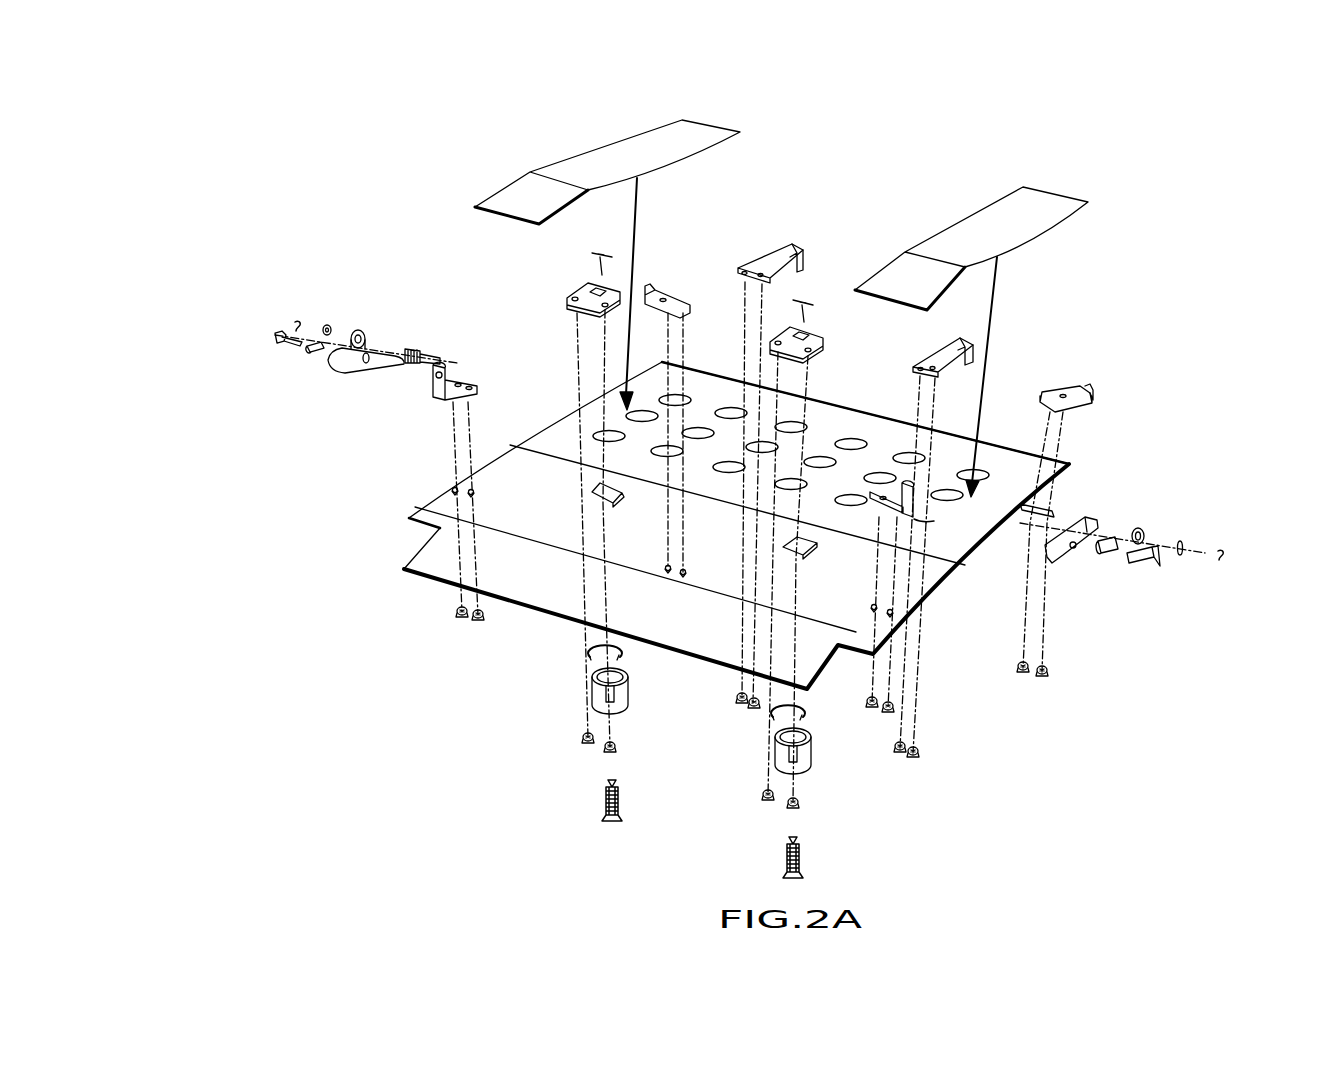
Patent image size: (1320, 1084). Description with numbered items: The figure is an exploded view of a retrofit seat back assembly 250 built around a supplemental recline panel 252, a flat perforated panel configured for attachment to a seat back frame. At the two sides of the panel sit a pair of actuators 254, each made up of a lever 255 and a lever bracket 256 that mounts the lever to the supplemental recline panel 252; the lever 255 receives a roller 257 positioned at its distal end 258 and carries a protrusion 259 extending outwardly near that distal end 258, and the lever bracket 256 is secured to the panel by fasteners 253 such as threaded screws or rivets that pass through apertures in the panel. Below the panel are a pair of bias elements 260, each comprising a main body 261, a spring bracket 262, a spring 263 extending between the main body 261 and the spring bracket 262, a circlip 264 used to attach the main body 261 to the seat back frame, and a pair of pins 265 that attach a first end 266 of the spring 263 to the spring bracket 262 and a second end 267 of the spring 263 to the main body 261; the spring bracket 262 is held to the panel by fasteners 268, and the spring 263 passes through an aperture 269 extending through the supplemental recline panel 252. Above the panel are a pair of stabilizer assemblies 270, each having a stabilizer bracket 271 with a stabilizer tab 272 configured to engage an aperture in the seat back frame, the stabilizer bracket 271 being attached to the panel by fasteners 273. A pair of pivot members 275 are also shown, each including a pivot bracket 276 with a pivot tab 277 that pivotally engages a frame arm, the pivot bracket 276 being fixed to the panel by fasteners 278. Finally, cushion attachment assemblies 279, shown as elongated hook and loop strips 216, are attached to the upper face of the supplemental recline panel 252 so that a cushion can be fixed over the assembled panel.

The hook and loop strips 216 is at (1040, 195).
The retrofit seat back assembly 250 is at (320, 186).
The supplemental recline panel 252 is at (435, 548).
The fasteners 253 is at (456, 613).
The actuators 254 is at (282, 383).
The lever 255 is at (340, 375).
The lever bracket 256 is at (445, 395).
The roller 257 is at (360, 332).
The distal end 258 is at (416, 346).
The protrusion 259 is at (410, 365).
The bias elements 260 is at (503, 689).
The main body 261 is at (620, 702).
The spring bracket 262 is at (578, 290).
The spring 263 is at (620, 793).
The circlip 264 is at (588, 653).
The pins 265 is at (604, 252).
The first end 266 is at (609, 784).
The second end 267 is at (603, 818).
The fasteners 268 is at (583, 739).
The aperture 269 is at (594, 490).
The stabilizer assemblies 270 is at (788, 195).
The stabilizer bracket 271 is at (765, 265).
The stabilizer tab 272 is at (805, 260).
The fasteners 273 is at (738, 698).
The pivot members 275 is at (1038, 338).
The pivot bracket 276 is at (1052, 390).
The pivot tab 277 is at (1090, 393).
The fasteners 278 is at (1050, 672).
The cushion attachment assemblies 279 is at (690, 125).